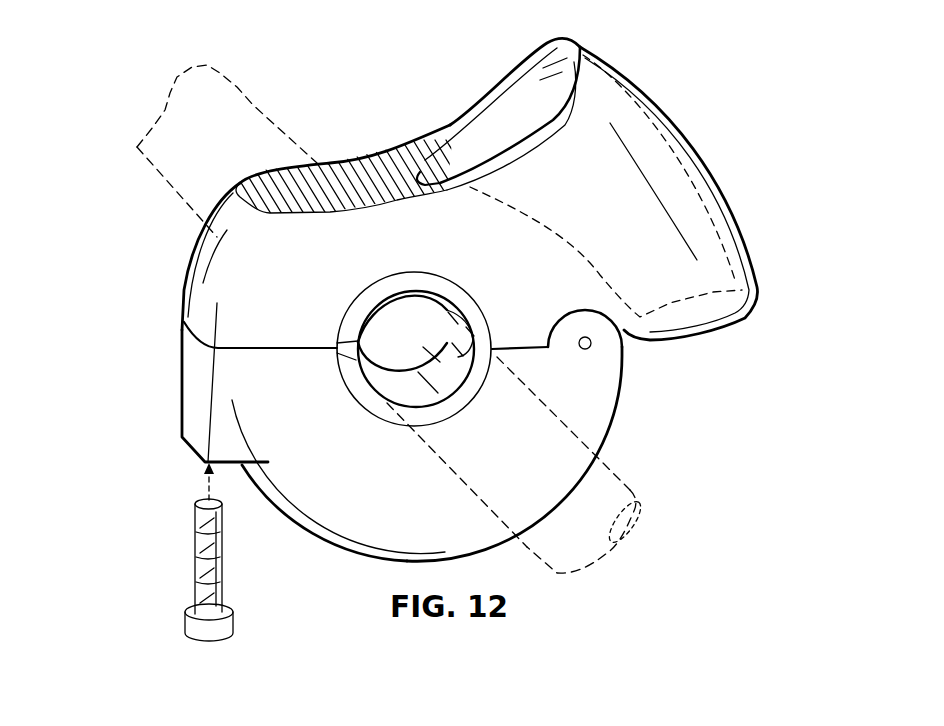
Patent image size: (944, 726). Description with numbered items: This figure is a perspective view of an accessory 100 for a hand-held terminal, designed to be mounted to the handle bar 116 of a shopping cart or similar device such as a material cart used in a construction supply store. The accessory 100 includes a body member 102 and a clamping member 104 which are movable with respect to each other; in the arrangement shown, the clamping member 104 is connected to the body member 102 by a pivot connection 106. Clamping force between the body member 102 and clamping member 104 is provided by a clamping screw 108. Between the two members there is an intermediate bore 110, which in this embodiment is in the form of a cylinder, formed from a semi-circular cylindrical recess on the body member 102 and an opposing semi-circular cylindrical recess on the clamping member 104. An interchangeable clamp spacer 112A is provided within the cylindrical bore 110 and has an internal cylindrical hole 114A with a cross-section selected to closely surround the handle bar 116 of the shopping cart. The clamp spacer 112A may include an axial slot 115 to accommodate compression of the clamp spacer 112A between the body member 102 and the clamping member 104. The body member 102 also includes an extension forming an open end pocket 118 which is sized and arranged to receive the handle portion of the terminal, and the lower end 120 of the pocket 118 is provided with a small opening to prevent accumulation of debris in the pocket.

The accessory 100 is at (768, 430).
The body member 102 is at (223, 238).
The clamping member 104 is at (318, 522).
The pivot connection 106 is at (591, 346).
The clamping screw 108 is at (195, 567).
The intermediate bore 110 is at (377, 280).
The interchangeable clamp spacer 112A is at (355, 318).
The internal cylindrical hole 114A is at (478, 345).
The axial slot 115 is at (345, 355).
The handle bar 116 is at (640, 497).
The open end pocket 118 is at (483, 135).
The lower end 120 is at (710, 315).